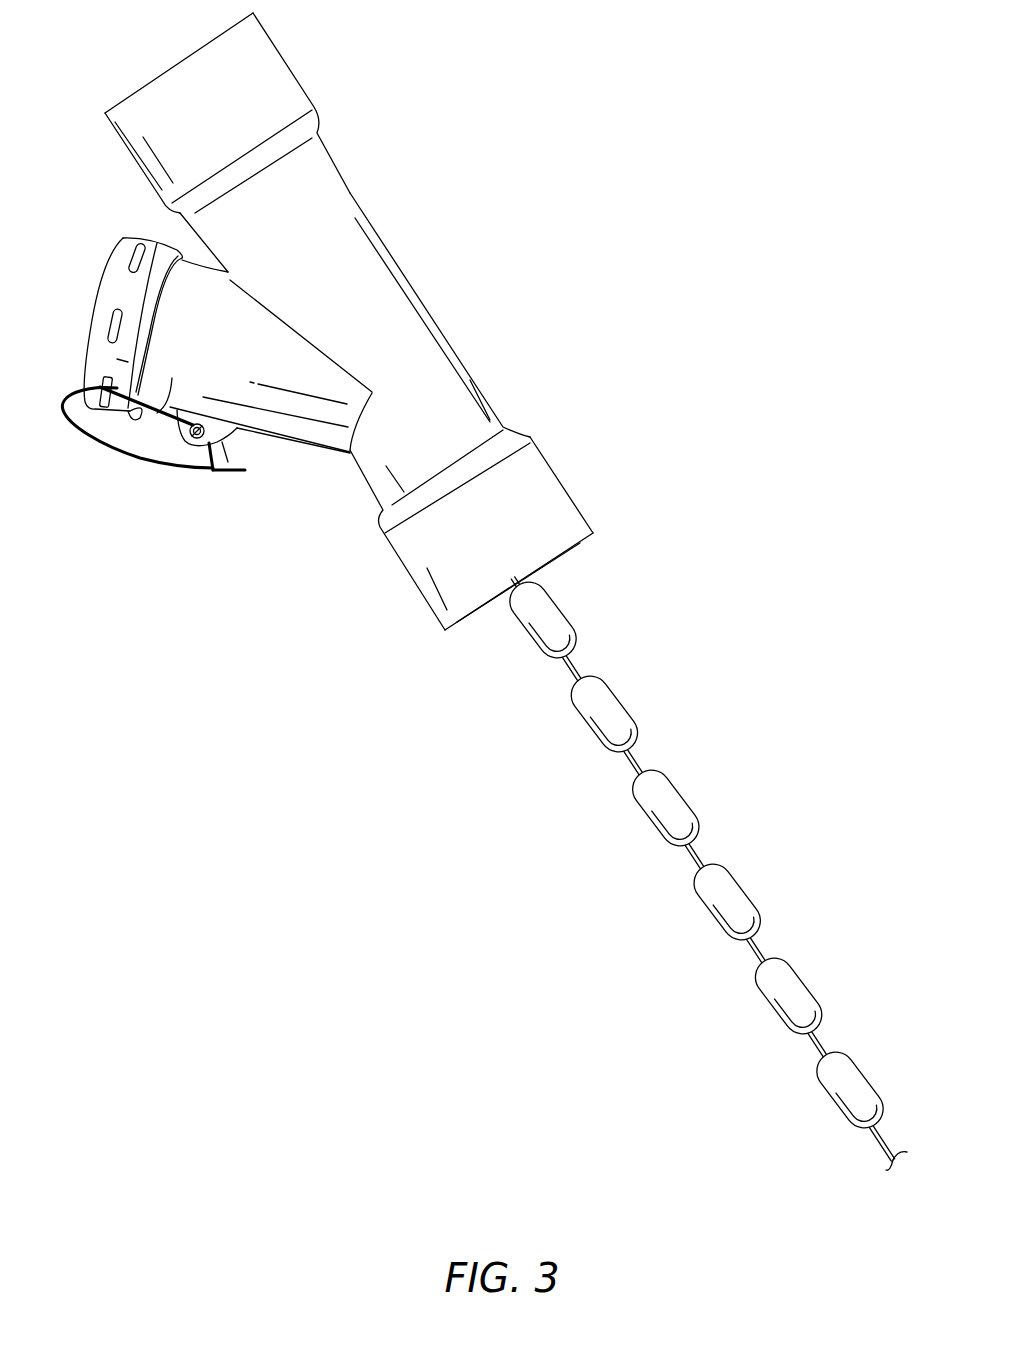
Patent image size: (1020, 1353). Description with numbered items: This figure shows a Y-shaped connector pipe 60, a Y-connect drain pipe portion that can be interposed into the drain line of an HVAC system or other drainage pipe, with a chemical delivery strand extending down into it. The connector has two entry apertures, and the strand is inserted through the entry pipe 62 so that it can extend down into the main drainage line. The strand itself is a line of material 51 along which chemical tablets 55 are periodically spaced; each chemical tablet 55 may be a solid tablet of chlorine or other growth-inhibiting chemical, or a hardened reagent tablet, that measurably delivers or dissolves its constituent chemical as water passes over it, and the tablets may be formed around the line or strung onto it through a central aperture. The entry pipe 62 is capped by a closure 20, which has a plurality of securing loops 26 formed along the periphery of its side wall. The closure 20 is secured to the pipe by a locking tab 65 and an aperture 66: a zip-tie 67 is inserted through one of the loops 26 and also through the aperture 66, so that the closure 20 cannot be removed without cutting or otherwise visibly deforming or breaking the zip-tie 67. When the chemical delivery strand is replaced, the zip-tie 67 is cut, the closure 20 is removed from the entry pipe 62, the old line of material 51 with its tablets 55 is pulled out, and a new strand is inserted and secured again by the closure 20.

The Y-shaped connector pipe 60 is at (440, 258).
The closure 20 is at (118, 263).
The securing loops 26 is at (88, 313).
The entry pipe 62 is at (110, 444).
The locking tab 65 is at (190, 446).
The aperture 66 is at (227, 462).
The zip-tie 67 is at (199, 468).
The line of material 51 is at (568, 667).
The chemical tablet 55 is at (552, 615).